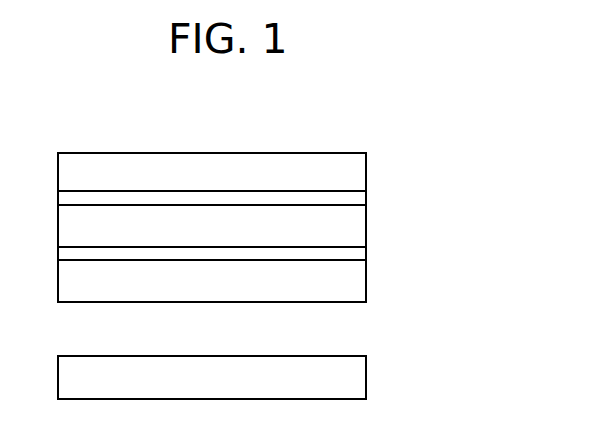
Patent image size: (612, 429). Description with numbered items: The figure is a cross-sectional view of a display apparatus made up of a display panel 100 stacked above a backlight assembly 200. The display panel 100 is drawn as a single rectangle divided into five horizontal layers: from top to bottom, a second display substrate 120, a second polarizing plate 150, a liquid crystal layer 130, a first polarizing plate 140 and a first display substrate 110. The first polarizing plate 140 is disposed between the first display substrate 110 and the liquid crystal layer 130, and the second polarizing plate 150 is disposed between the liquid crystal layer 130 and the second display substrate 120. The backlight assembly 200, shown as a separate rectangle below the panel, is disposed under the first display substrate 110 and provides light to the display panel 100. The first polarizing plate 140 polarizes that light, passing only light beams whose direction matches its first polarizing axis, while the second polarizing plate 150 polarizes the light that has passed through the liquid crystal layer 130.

The display panel 100 is at (267, 227).
The first display substrate 110 is at (240, 281).
The second display substrate 120 is at (366, 174).
The liquid crystal layer 130 is at (366, 229).
The first polarizing plate 140 is at (366, 254).
The second polarizing plate 150 is at (366, 199).
The backlight assembly 200 is at (366, 380).